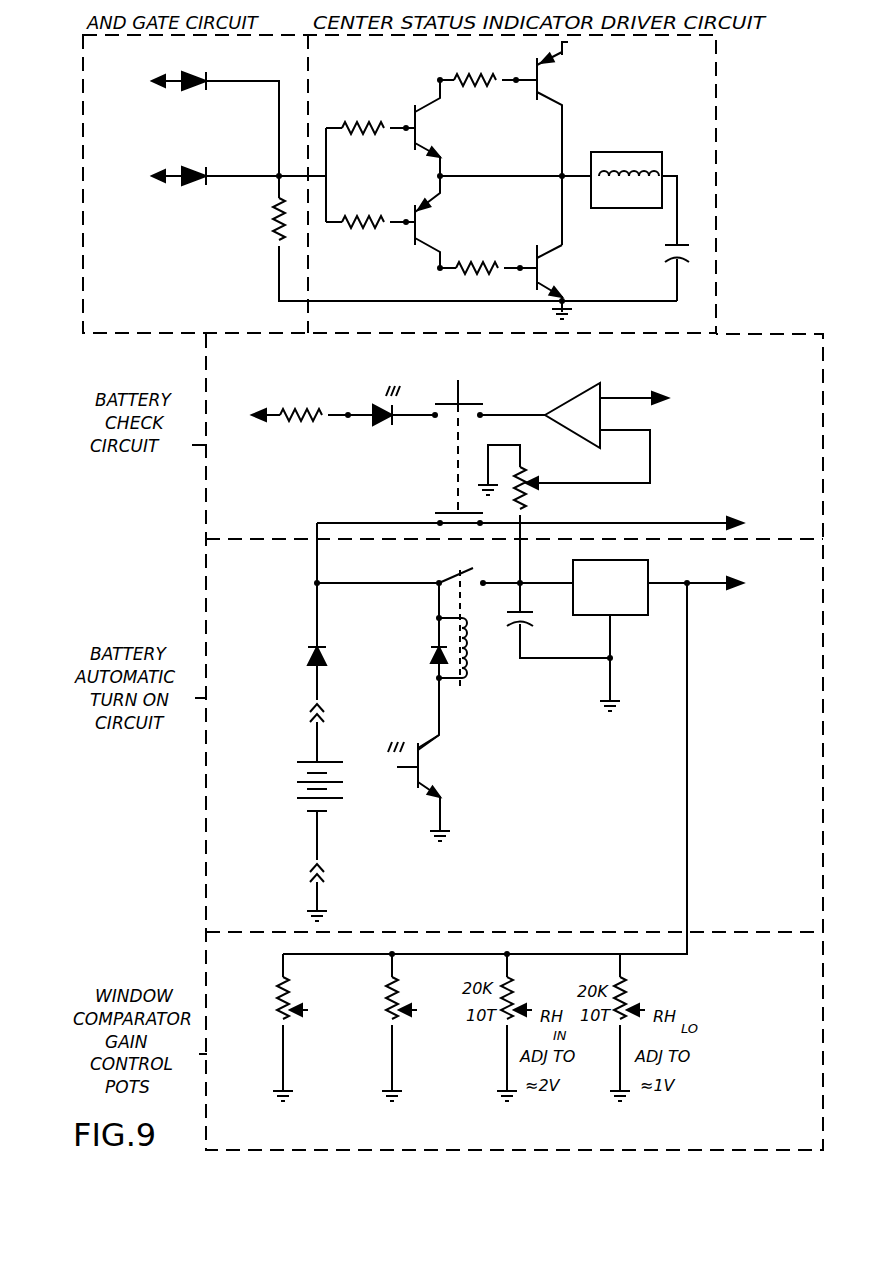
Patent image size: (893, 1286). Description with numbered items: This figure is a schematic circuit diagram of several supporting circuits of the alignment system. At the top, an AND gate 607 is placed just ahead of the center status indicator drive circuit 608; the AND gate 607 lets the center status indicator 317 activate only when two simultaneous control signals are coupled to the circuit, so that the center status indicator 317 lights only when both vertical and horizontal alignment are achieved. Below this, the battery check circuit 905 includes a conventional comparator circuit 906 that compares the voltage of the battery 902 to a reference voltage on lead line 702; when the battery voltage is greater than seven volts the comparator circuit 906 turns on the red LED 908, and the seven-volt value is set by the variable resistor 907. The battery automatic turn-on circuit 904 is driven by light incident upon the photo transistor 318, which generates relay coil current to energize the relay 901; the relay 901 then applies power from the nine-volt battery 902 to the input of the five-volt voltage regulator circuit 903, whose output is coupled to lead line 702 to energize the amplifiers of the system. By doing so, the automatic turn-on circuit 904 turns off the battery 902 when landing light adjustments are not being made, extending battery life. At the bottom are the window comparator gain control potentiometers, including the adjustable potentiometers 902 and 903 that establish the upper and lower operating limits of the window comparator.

The AND gate 607 is at (130, 64).
The center status indicator drive circuit 608 is at (697, 64).
The center status indicator 317 is at (662, 165).
The battery check circuit 905 is at (207, 493).
The lead line 702 is at (273, 418).
The red LED 908 is at (365, 427).
The comparator circuit 906 is at (587, 389).
The variable resistor 907 is at (527, 470).
The battery automatic turn-on circuit 904 is at (207, 779).
The 9-volt battery 902 is at (304, 786).
The 5-volt voltage regulator circuit 903 is at (652, 600).
The relay 901 is at (467, 679).
The photo transistor 318 is at (410, 774).